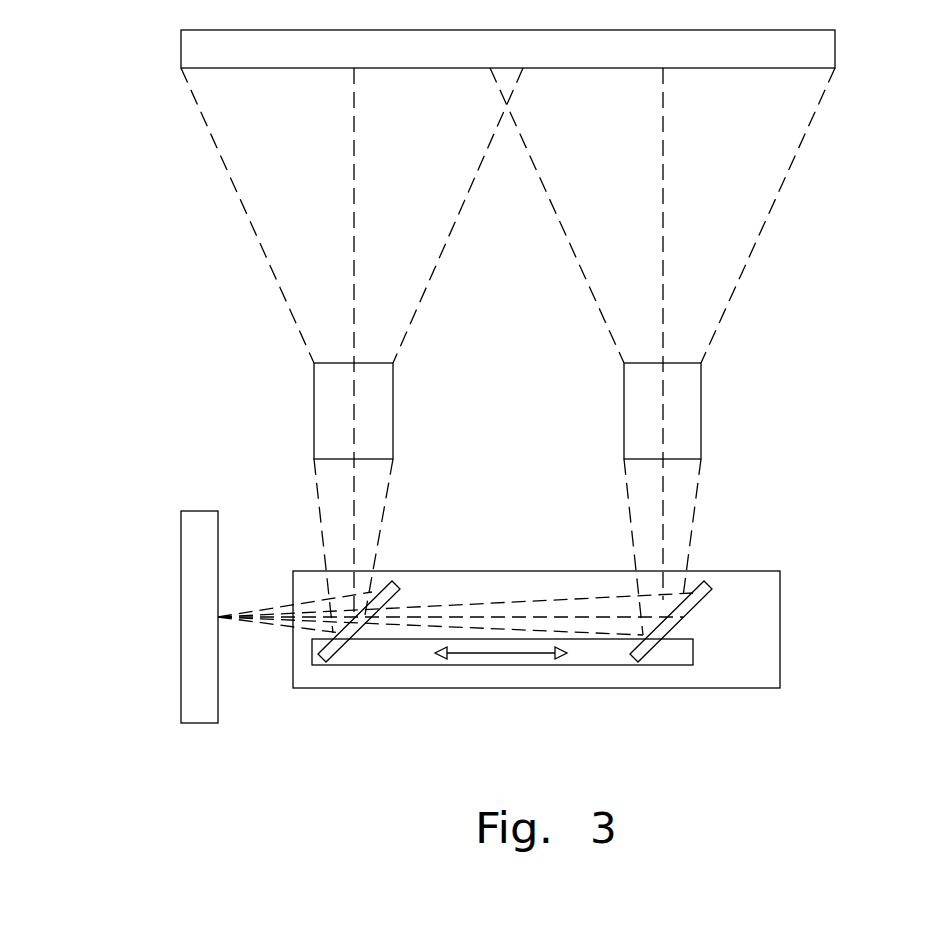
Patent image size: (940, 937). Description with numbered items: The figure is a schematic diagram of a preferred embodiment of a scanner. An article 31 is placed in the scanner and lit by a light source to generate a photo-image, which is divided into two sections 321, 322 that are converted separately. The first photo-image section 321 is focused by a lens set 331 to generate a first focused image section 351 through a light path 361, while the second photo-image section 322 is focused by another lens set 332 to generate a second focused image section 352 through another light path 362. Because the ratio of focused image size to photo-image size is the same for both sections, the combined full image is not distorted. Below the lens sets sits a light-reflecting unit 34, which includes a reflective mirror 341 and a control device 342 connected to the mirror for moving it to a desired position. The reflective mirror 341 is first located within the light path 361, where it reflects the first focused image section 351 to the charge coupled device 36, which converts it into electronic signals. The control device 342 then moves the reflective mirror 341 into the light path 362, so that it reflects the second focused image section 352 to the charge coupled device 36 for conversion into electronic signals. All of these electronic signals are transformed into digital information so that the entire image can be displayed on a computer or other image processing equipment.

The article 31 is at (802, 51).
The first photo-image section 321 is at (213, 145).
The second photo-image section 322 is at (802, 145).
The lens set 331 is at (333, 405).
The lens set 332 is at (682, 405).
The light-reflecting unit 34 is at (763, 602).
The reflective mirror 341 is at (392, 583).
The control device 342 is at (700, 646).
The first focused image section 351 is at (333, 597).
The second focused image section 352 is at (642, 598).
The charge coupled device 36 is at (193, 590).
The light path 361 is at (353, 493).
The light path 362 is at (663, 493).